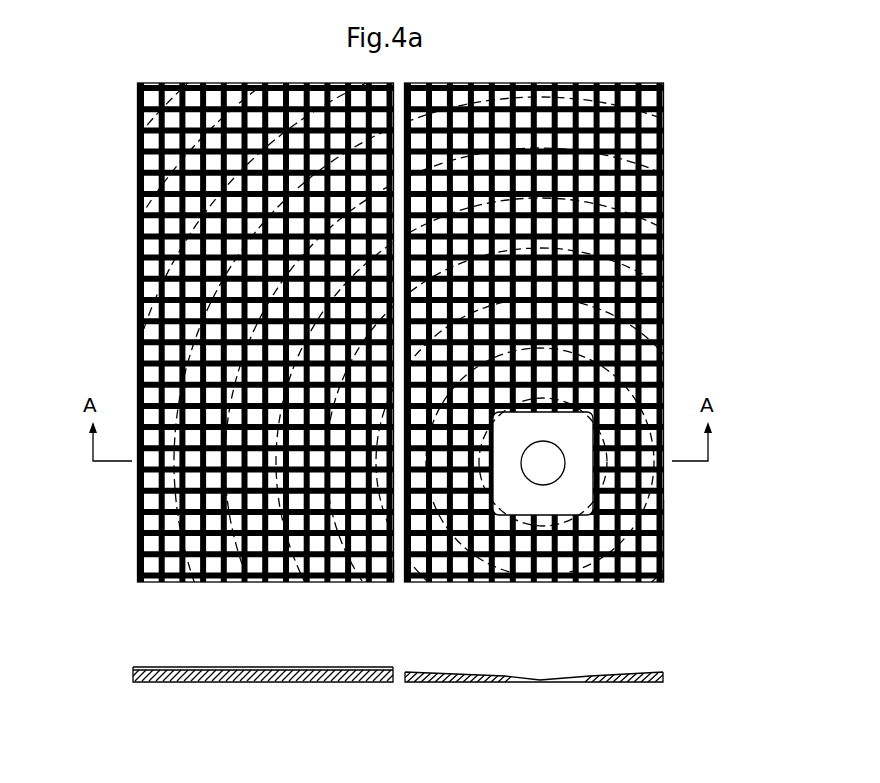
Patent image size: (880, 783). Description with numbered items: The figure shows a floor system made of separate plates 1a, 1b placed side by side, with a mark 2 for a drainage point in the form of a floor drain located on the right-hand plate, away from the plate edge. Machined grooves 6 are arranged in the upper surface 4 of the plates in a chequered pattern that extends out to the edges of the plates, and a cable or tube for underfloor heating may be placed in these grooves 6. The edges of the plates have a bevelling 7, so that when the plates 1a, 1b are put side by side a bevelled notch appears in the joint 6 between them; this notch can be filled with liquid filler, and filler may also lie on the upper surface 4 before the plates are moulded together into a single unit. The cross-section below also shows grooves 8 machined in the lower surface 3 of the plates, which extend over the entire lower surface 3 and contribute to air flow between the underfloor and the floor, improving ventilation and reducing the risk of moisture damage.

The plate 1a is at (140, 214).
The plate 1b is at (648, 208).
The mark for a drainage point 2 is at (545, 480).
The lower surface 3 is at (147, 681).
The upper surface 4 is at (172, 667).
The grooves 6 is at (655, 528).
The bevelling 7 is at (393, 670).
The grooves 8 is at (216, 682).